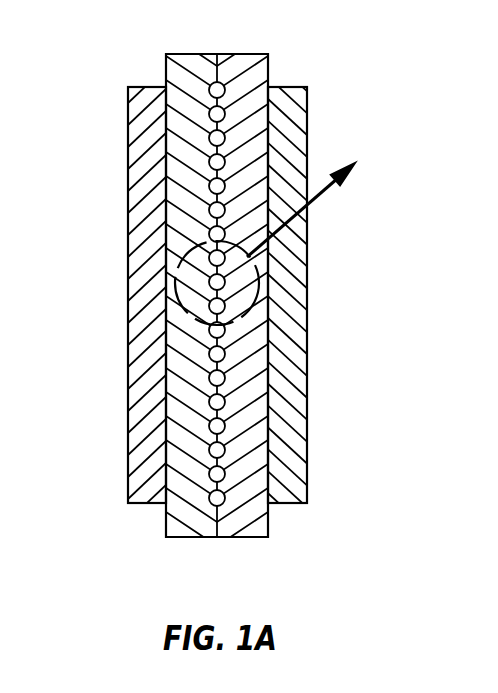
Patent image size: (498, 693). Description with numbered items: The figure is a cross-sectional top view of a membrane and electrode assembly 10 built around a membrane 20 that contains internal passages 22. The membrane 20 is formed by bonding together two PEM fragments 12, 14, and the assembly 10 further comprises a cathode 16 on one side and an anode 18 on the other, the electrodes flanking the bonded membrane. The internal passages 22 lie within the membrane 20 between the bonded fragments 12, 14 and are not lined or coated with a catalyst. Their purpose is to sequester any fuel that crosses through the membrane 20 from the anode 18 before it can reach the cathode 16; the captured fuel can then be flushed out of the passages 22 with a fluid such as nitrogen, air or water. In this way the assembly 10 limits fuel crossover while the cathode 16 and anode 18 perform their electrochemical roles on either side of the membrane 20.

The membrane and electrode assembly 10 is at (96, 60).
The PEM fragment 12 is at (230, 61).
The PEM fragment 14 is at (202, 61).
The cathode 16 is at (307, 442).
The anode 18 is at (128, 378).
The membrane 20 is at (205, 527).
The internal passages 22 is at (237, 527).